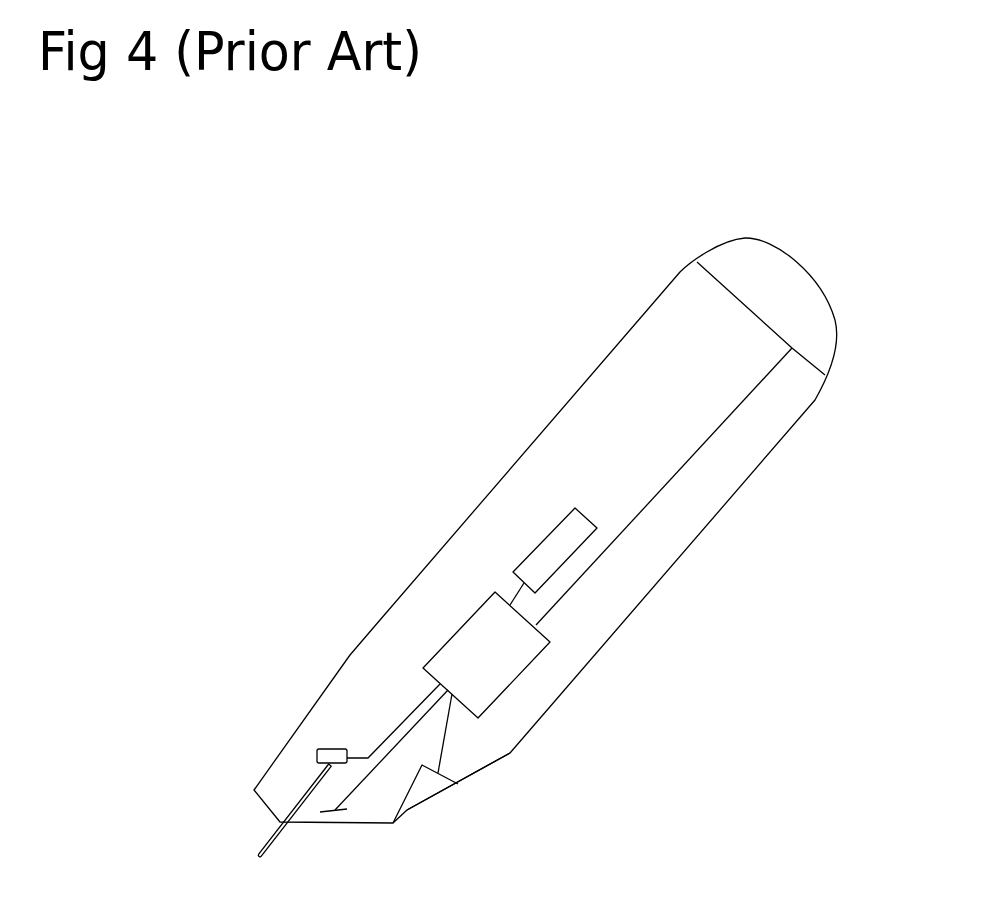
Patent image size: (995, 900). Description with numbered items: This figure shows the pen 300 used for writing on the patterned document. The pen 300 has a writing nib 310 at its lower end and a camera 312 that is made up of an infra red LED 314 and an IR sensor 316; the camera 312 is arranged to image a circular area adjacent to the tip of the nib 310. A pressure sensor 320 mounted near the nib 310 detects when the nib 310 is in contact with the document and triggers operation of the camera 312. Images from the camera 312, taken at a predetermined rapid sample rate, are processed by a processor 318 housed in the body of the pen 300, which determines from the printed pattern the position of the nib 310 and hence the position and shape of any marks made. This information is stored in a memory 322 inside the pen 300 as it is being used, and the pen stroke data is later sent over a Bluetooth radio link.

The pen 300 is at (578, 385).
The writing nib 310 is at (277, 831).
The camera 312 is at (450, 803).
The infra red LED 314 is at (407, 810).
The IR sensor 316 is at (318, 812).
The processor 318 is at (510, 655).
The pressure sensor 320 is at (317, 748).
The memory 322 is at (553, 528).